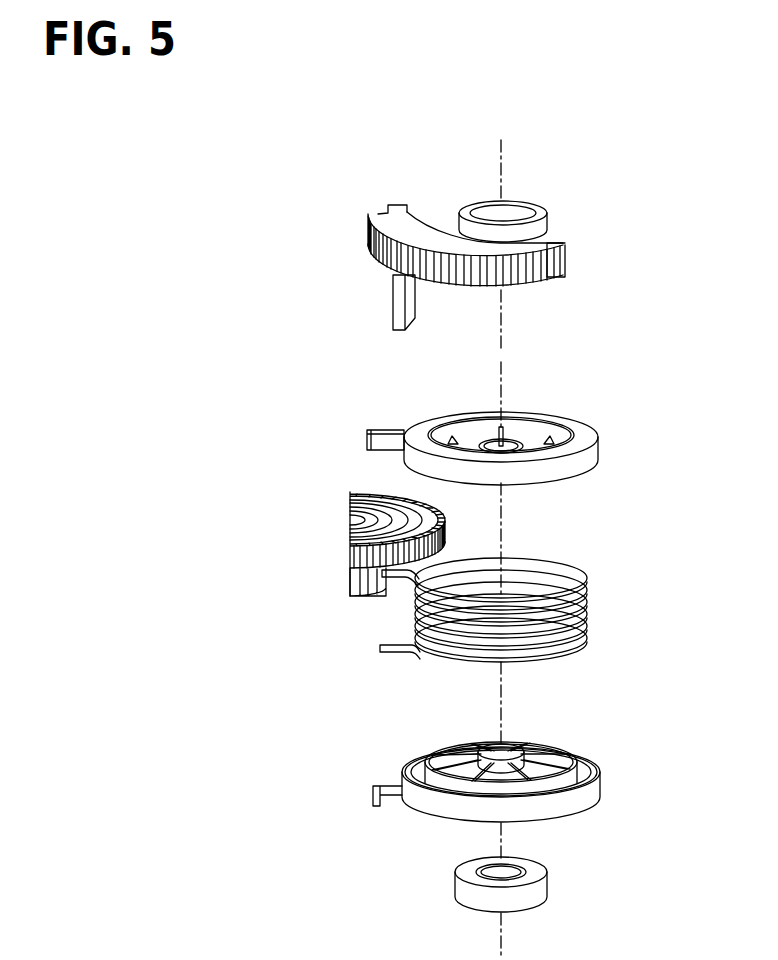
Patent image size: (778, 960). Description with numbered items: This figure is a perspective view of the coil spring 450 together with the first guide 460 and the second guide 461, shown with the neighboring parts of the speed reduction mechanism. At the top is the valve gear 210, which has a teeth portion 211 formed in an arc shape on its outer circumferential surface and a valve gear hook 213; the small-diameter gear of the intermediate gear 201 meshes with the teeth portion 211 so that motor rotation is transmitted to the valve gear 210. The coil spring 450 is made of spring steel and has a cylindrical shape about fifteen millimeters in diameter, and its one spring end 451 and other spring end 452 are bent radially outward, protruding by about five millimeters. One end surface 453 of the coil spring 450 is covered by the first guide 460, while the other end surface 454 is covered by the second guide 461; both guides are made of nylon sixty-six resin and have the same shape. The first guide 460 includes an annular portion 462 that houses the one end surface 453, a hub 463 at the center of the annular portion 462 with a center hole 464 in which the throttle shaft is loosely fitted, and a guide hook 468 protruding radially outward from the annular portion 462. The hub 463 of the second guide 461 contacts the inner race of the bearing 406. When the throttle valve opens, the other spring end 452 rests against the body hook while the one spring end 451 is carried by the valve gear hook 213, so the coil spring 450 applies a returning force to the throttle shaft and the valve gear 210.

The valve gear 210 is at (565, 256).
The teeth portion 211 is at (367, 213).
The valve gear hook 213 is at (393, 278).
The first guide 460 is at (471, 426).
The annular portion 462 is at (585, 433).
The hub 463 is at (510, 440).
The center hole 464 is at (492, 447).
The guide hook 468 is at (367, 438).
The intermediate gear 201 is at (352, 498).
The coil spring 450 is at (458, 609).
The one spring end 451 is at (385, 578).
The other spring end 452 is at (380, 652).
The one end surface 453 is at (543, 562).
The other end surface 454 is at (540, 660).
The second guide 461 is at (590, 775).
The bearing 406 is at (547, 883).